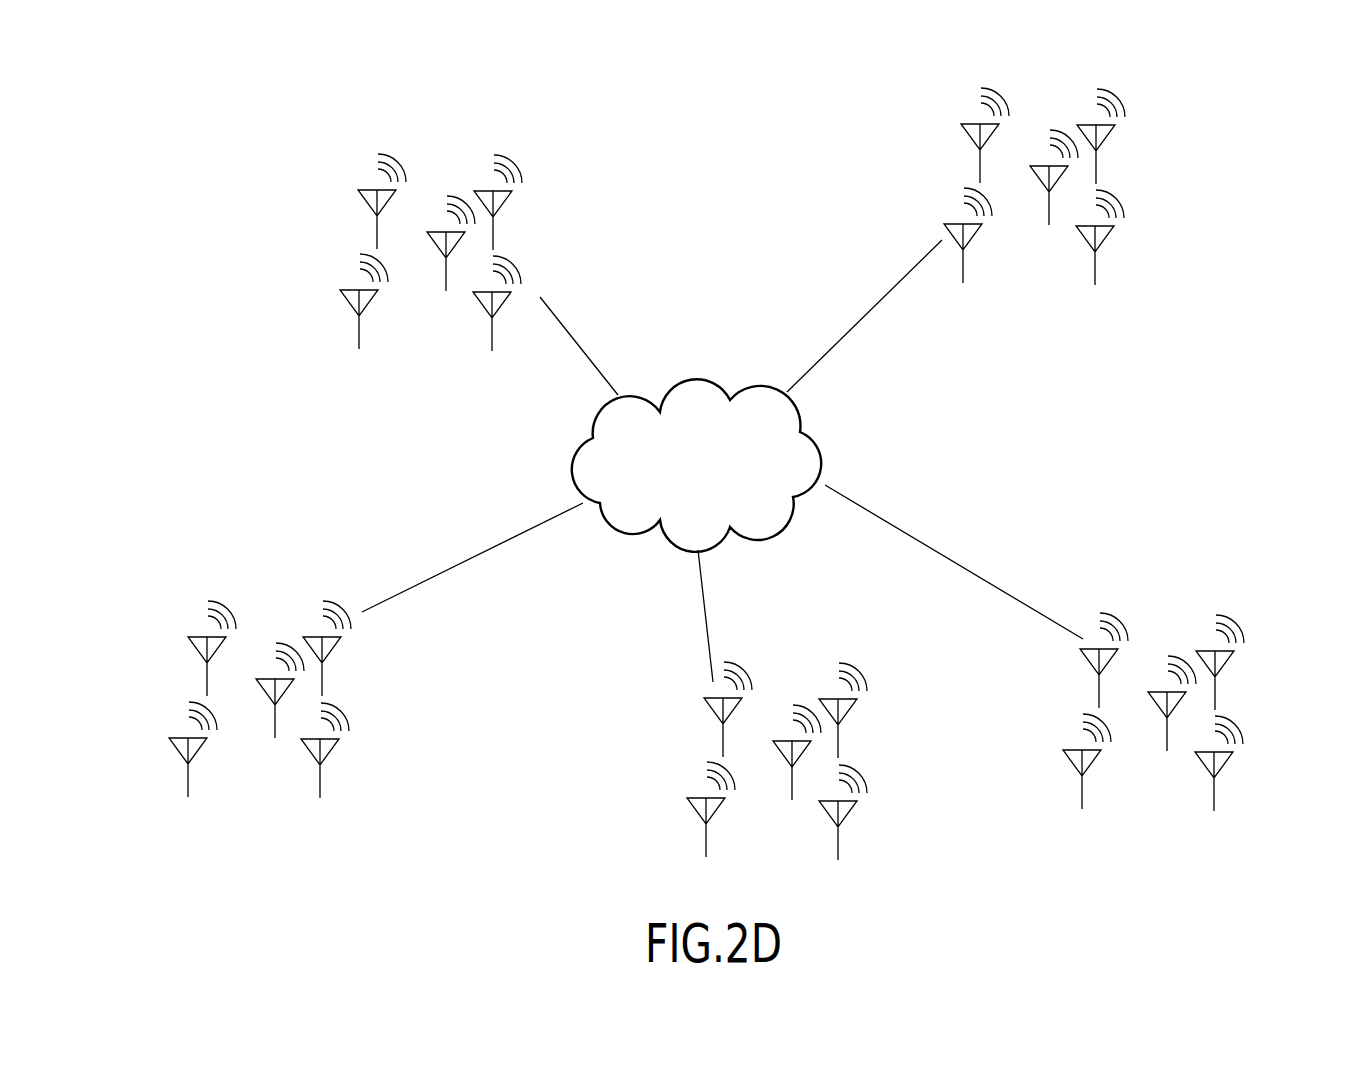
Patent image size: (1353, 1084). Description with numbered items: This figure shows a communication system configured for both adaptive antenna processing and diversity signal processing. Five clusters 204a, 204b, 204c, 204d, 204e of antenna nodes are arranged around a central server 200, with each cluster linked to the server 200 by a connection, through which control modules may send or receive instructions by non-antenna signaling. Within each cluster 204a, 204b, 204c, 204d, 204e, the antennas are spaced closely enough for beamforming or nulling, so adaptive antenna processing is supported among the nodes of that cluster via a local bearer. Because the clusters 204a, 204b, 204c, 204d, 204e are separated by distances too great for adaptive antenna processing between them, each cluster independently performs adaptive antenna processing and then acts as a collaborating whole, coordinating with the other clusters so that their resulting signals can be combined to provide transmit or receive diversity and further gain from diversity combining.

The server 200 is at (719, 473).
The cluster 204a is at (181, 609).
The cluster 204b is at (347, 162).
The cluster 204c is at (1127, 78).
The cluster 204d is at (1227, 793).
The cluster 204e is at (868, 829).